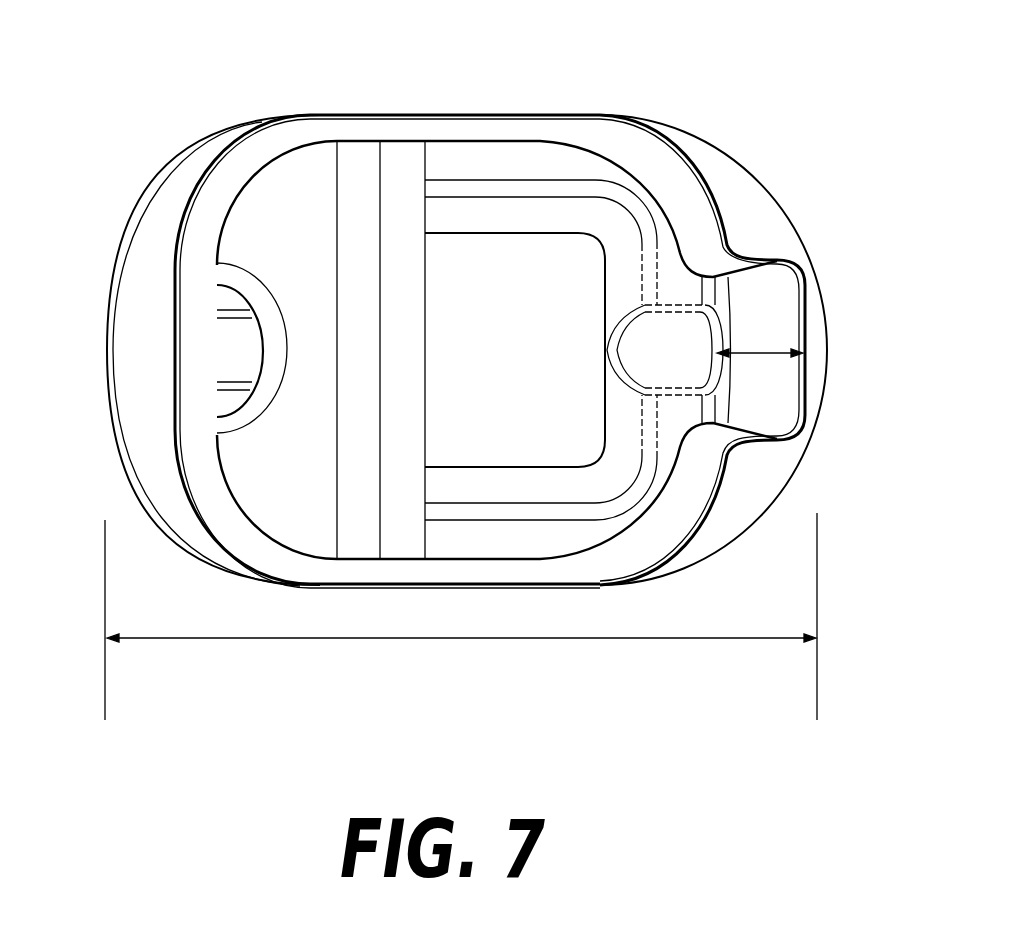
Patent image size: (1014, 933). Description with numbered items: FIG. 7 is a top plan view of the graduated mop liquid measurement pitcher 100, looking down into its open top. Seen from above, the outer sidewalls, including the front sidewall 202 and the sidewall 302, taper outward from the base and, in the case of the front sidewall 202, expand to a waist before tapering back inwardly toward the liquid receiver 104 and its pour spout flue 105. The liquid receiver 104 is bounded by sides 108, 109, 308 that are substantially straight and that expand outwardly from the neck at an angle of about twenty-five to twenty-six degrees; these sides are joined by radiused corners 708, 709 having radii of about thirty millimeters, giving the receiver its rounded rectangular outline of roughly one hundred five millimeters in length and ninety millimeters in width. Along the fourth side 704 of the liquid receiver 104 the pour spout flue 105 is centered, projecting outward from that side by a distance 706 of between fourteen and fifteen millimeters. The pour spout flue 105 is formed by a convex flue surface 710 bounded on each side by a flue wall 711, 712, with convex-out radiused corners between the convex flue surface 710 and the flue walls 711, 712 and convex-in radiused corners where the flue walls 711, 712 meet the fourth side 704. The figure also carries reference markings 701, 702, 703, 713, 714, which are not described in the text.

The graduated mop liquid measurement pitcher 100 is at (113, 140).
The liquid receiver 104 is at (485, 150).
The pour spout flue 105 is at (825, 308).
The side of the liquid receiver 108 is at (410, 584).
The side of the liquid receiver 109 is at (173, 355).
The front sidewall 202 is at (817, 353).
The sidewall 302 is at (127, 325).
The side of the liquid receiver 308 is at (413, 114).
The cavity 701 is at (565, 425).
The overall width 702 is at (552, 640).
The compartment 703 is at (425, 363).
The fourth side of the liquid receiver 704 is at (700, 177).
The distance 706 is at (747, 352).
The radiused corner 708 is at (222, 153).
The radiused corner 709 is at (205, 530).
The convex flue surface 710 is at (810, 402).
The flue wall 711 is at (777, 447).
The flue wall 712 is at (763, 257).
The channel 713 is at (690, 245).
The lower notch 714 is at (733, 457).